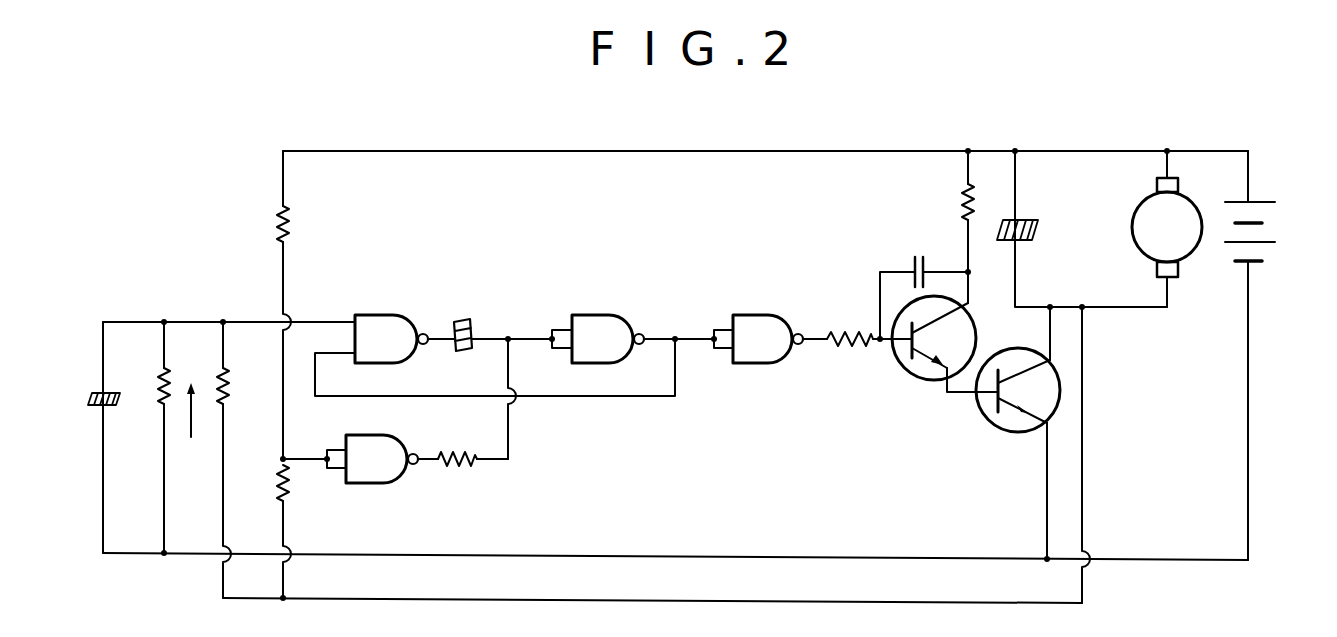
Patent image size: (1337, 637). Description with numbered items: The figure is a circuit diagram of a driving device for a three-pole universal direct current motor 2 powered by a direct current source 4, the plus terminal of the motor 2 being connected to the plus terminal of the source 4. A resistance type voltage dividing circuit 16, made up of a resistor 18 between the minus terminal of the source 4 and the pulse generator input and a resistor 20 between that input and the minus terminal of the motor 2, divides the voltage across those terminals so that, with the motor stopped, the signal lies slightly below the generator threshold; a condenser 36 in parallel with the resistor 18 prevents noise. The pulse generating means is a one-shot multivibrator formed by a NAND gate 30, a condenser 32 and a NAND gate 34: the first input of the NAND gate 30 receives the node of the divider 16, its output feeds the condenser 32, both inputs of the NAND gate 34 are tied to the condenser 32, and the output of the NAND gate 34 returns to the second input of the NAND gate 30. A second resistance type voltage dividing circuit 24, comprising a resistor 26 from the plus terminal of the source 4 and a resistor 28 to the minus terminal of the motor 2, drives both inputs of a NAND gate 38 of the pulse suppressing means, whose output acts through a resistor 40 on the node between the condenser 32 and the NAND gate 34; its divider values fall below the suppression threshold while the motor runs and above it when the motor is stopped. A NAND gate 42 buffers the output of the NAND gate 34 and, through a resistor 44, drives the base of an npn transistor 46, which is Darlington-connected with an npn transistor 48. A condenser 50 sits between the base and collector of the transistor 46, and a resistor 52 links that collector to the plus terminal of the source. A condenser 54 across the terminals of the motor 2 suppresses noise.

The direct current motor 2 is at (1186, 198).
The direct current source 4 is at (1272, 202).
The resistance type voltage dividing circuit 16 is at (190, 430).
The resistor 18 is at (162, 400).
The resistor 20 is at (226, 366).
The resistance type voltage dividing circuit 24 is at (276, 413).
The resistor 26 is at (283, 206).
The resistor 28 is at (290, 488).
The NAND gate 30 is at (410, 318).
The condenser 32 is at (475, 328).
The NAND gate 34 is at (626, 318).
The condenser 36 is at (97, 407).
The NAND gate 38 is at (393, 485).
The resistor 40 is at (475, 465).
The NAND gate 42 is at (785, 322).
The resistor 44 is at (837, 350).
The npn transistor 46 is at (919, 382).
The npn transistor 48 is at (995, 428).
The condenser 50 is at (913, 268).
The resistor 52 is at (964, 188).
The condenser 54 is at (1020, 222).